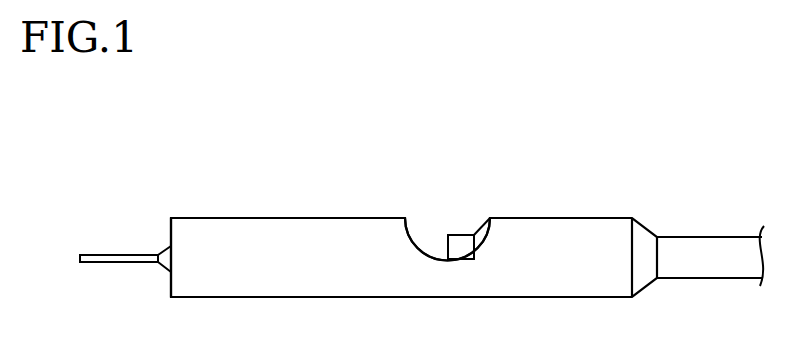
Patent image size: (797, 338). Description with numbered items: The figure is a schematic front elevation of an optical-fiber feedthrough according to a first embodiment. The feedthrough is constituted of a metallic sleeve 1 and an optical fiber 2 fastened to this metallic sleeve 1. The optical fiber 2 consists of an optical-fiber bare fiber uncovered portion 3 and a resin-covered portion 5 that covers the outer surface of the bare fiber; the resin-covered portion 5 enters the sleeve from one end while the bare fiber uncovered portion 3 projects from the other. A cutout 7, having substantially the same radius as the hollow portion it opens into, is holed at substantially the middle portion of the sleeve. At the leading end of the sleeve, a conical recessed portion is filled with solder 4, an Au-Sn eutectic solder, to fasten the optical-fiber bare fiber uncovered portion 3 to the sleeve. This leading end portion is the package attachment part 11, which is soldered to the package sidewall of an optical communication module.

The metallic sleeve 1 is at (257, 215).
The package attachment part 11 is at (195, 217).
The cutout 7 is at (430, 232).
The optical-fiber bare fiber uncovered portion 3 is at (92, 253).
The solder 4 is at (164, 250).
The optical fiber 2 is at (687, 234).
The resin-covered portion 5 is at (743, 236).